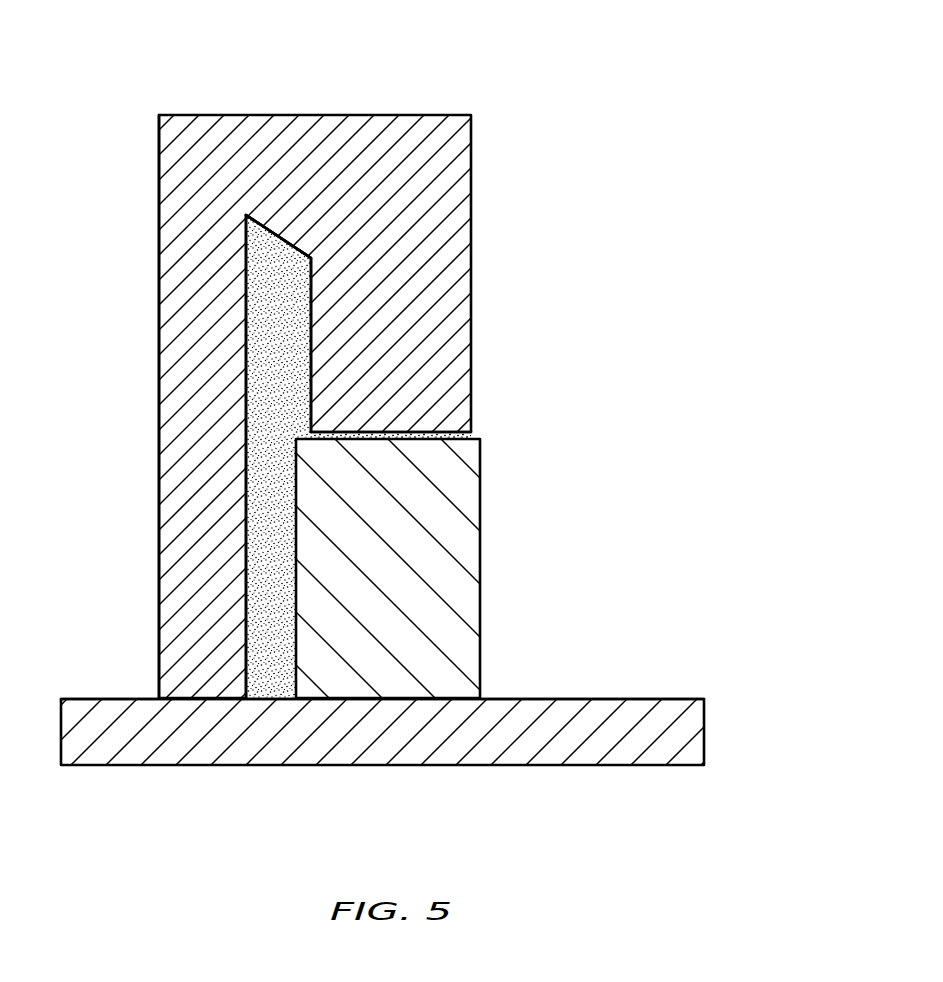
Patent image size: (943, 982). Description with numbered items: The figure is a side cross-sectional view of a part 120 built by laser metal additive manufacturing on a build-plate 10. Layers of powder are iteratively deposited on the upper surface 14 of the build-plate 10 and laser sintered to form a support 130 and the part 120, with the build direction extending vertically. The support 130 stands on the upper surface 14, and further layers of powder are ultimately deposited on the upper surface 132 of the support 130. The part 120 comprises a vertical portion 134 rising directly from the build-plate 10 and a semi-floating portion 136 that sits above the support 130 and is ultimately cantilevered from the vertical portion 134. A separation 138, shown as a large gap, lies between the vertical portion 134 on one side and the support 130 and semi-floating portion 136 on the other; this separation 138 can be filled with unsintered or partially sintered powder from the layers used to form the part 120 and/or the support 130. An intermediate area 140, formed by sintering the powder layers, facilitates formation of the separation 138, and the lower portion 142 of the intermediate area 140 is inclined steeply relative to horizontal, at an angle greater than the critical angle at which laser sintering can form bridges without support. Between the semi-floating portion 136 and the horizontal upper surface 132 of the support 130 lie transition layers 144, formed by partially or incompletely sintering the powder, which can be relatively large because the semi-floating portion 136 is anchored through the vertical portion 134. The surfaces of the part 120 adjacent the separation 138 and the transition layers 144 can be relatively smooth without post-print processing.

The build-plate 10 is at (722, 721).
The upper surface of the build-plate 14 is at (673, 698).
The part 120 is at (471, 365).
The support 130 is at (488, 585).
The upper surface of the support 132 is at (445, 437).
The vertical portion 134 is at (212, 465).
The semi-floating portion 136 is at (443, 307).
The separation 138 is at (275, 387).
The intermediate area 140 is at (282, 220).
The lower portion of the intermediate area 142 is at (280, 237).
The transition layers 144 is at (387, 435).